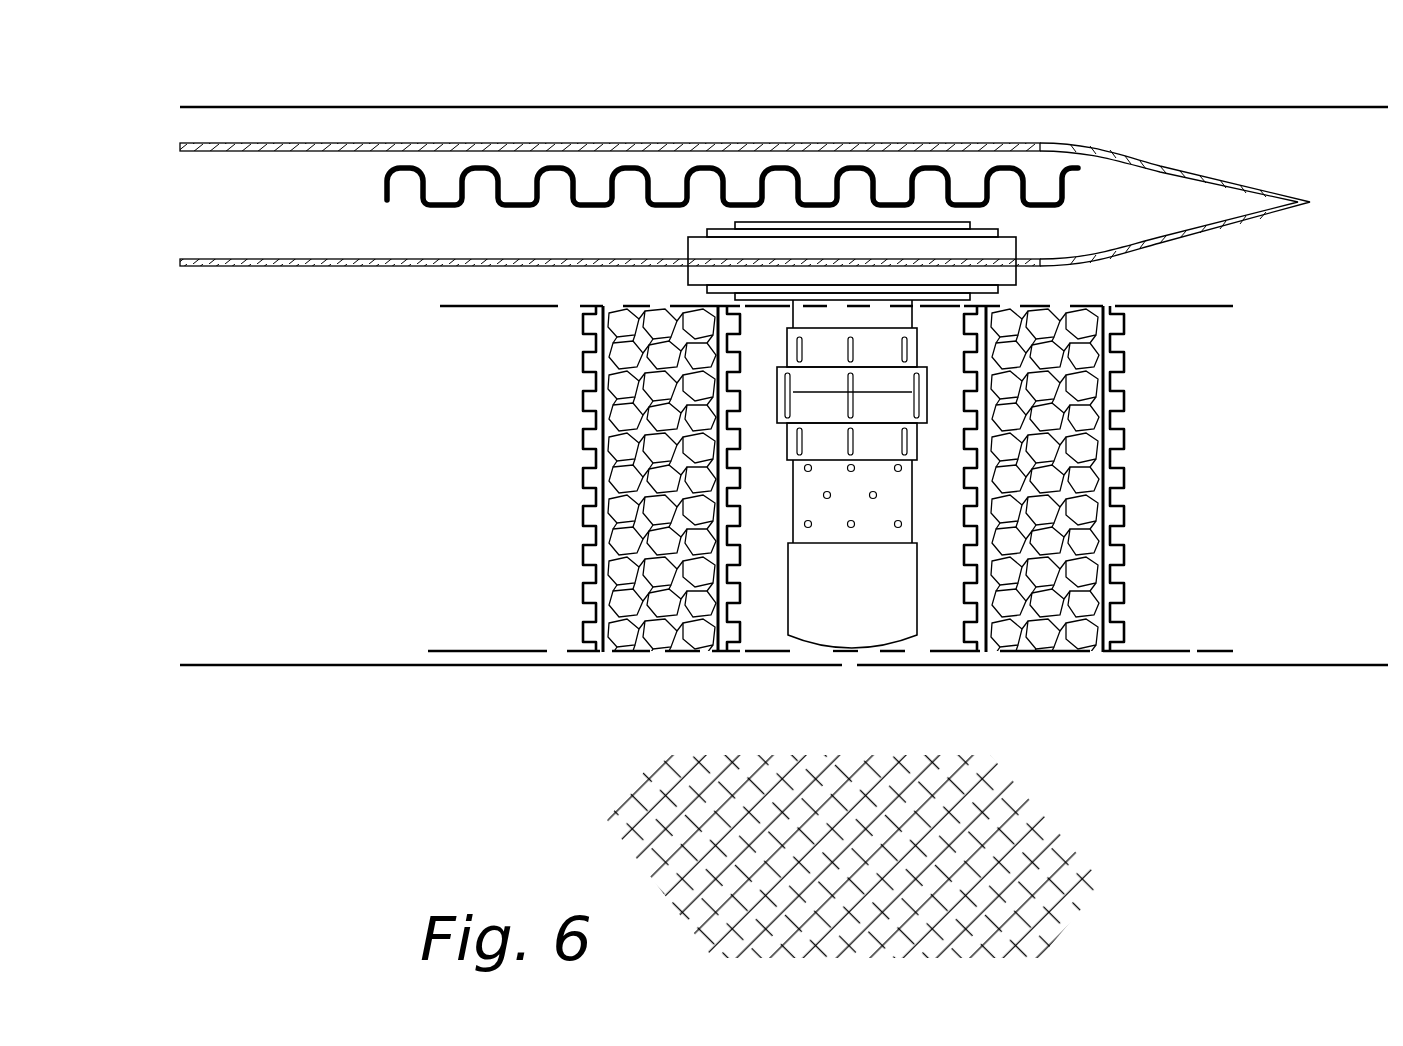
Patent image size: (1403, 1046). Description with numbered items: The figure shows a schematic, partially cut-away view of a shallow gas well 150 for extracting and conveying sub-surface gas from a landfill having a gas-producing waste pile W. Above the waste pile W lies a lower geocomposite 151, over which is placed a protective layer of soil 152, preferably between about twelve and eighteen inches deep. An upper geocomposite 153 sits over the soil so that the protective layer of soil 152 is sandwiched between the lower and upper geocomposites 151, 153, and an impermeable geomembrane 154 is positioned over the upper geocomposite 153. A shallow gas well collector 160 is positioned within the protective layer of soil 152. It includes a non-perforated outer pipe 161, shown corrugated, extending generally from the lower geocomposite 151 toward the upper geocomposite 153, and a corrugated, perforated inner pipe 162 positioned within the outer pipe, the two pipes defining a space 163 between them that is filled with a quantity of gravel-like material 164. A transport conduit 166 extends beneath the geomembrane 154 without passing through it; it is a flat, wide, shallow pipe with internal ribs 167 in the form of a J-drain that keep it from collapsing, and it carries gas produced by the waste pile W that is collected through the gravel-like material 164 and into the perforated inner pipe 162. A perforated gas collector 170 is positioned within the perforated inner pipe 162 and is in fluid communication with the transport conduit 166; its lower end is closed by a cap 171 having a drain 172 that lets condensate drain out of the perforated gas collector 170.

The shallow gas well 150 is at (1138, 777).
The lower geocomposite 151 is at (1163, 650).
The protective layer of soil 152 is at (333, 537).
The upper geocomposite 153 is at (1197, 310).
The impermeable geomembrane 154 is at (1011, 107).
The shallow gas well collector 160 is at (788, 683).
The non-perforated outer pipe 161 is at (583, 553).
The perforated inner pipe 162 is at (720, 362).
The space 163 is at (653, 490).
The gravel-like material 164 is at (693, 634).
The transport conduit 166 is at (289, 146).
The internal ribs 167 is at (556, 165).
The perforated gas collector 170 is at (888, 487).
The cap 171 is at (885, 608).
The drain 172 is at (850, 655).
The gas-producing waste pile W is at (869, 858).